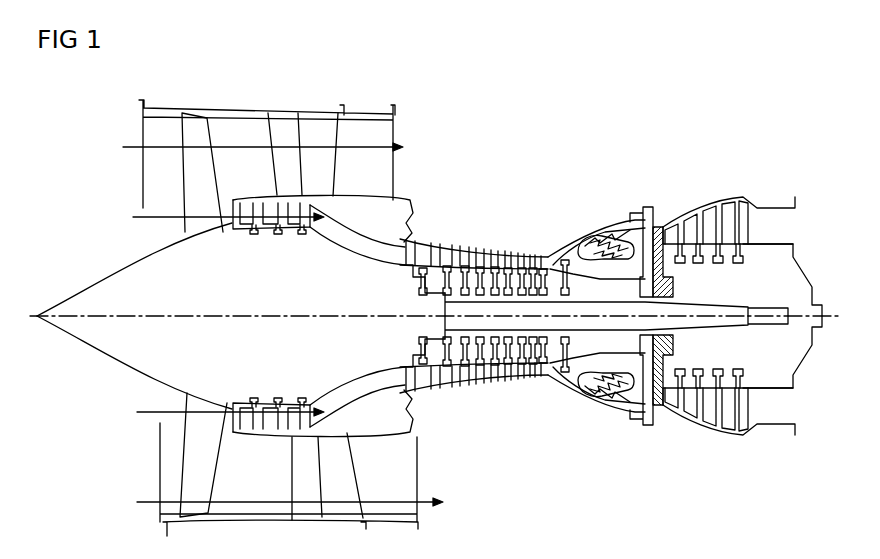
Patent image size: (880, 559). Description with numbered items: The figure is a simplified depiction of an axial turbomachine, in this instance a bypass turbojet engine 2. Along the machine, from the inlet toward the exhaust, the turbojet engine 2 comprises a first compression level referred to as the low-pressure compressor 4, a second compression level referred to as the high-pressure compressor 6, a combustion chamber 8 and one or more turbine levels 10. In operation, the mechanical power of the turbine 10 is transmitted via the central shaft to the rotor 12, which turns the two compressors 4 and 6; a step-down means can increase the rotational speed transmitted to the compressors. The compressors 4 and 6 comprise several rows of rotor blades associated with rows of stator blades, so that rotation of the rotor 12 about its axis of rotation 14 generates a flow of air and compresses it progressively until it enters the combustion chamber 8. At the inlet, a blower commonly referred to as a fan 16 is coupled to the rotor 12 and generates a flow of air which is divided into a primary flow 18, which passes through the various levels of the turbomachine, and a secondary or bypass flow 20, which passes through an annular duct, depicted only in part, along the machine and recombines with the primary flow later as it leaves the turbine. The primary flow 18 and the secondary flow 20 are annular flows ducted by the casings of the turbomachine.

The turbojet engine 2 is at (594, 138).
The low-pressure compressor 4 is at (250, 230).
The high-pressure compressor 6 is at (453, 250).
The combustion chamber 8 is at (578, 255).
The turbine 10 is at (727, 222).
The rotor 12 is at (118, 340).
The axis of rotation 14 is at (282, 318).
The fan 16 is at (198, 172).
The primary flow 18 is at (216, 315).
The secondary flow 20 is at (270, 322).